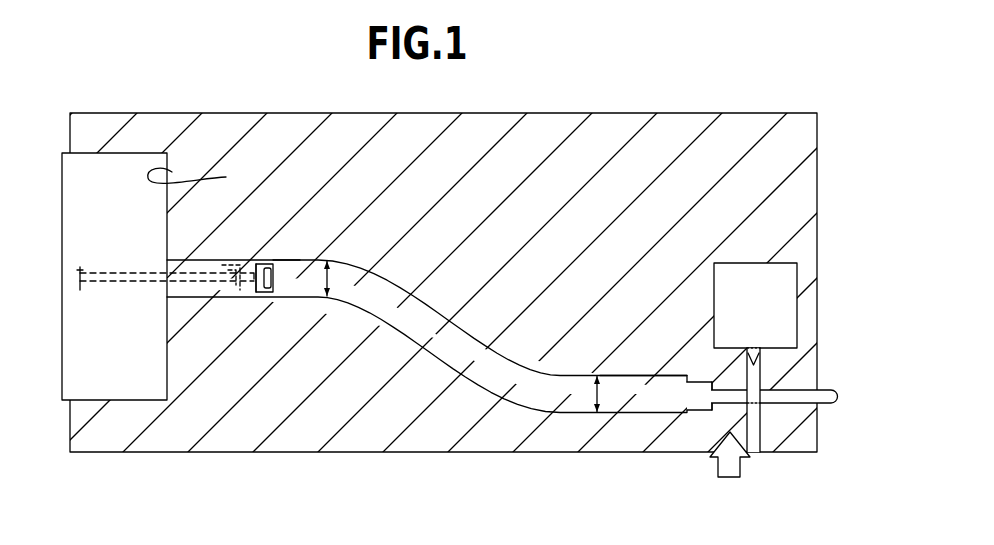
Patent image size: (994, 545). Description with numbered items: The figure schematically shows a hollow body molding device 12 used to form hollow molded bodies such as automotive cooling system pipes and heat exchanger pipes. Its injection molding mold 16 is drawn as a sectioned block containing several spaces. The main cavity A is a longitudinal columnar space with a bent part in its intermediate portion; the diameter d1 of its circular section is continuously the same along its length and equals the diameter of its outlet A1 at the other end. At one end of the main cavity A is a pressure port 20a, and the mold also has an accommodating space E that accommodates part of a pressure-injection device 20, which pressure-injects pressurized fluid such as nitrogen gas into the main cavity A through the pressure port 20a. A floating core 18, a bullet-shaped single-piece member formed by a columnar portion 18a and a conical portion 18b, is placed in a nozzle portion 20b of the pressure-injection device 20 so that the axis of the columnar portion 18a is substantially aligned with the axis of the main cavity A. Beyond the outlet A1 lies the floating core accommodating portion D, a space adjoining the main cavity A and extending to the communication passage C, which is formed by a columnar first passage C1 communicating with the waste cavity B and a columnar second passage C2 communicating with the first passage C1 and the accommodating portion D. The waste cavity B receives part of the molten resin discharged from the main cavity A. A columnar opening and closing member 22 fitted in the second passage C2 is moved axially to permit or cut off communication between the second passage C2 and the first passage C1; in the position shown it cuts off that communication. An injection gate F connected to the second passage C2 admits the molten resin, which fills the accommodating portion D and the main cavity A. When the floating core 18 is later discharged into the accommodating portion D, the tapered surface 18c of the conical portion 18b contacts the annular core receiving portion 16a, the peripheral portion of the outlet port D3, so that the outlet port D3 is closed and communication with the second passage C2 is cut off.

The hollow body molding device 12 is at (173, 70).
The injection molding mold 16 is at (356, 128).
The core receiving portion 16a is at (711, 382).
The floating core 18 is at (268, 293).
The columnar portion 18a is at (253, 296).
The conical portion 18b is at (279, 288).
The tapered surface 18c is at (290, 260).
The pressure-injection device 20 is at (128, 142).
The pressure port 20a is at (220, 297).
The nozzle portion 20b is at (224, 263).
The opening and closing member 22 is at (788, 397).
The main cavity A is at (431, 336).
The outlet A1 is at (659, 375).
The waste cavity B is at (751, 280).
The communication passage C is at (770, 383).
The first passage C1 is at (757, 350).
The second passage C2 is at (747, 405).
The floating core accommodating portion D is at (701, 386).
The outlet port D3 is at (712, 410).
The accommodating space E is at (194, 177).
The injection gate F is at (722, 434).
The diameter of the main cavity d1 is at (476, 336).